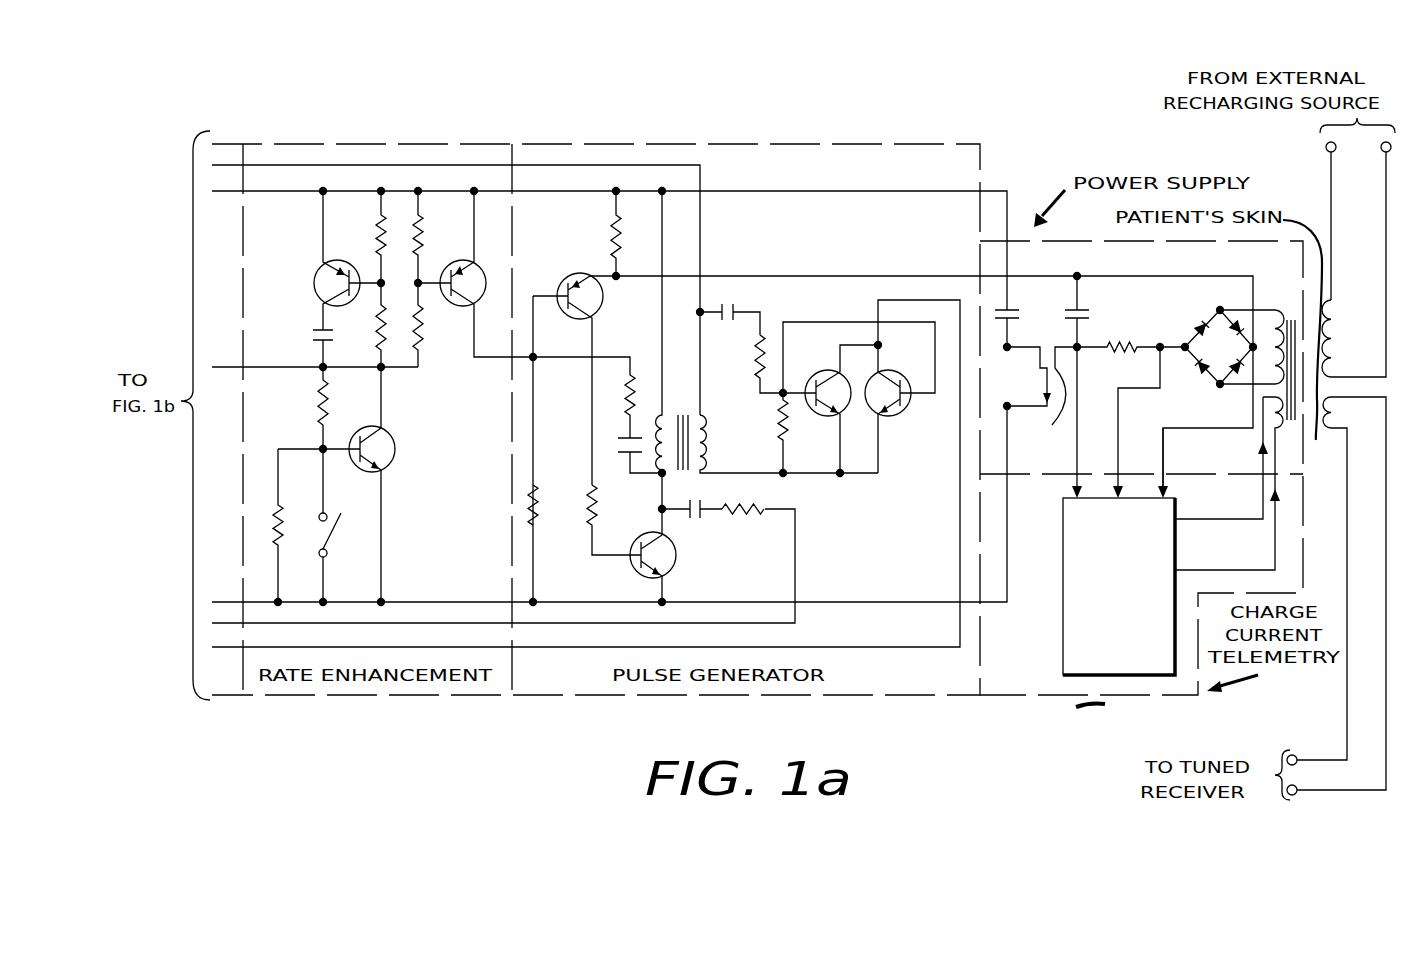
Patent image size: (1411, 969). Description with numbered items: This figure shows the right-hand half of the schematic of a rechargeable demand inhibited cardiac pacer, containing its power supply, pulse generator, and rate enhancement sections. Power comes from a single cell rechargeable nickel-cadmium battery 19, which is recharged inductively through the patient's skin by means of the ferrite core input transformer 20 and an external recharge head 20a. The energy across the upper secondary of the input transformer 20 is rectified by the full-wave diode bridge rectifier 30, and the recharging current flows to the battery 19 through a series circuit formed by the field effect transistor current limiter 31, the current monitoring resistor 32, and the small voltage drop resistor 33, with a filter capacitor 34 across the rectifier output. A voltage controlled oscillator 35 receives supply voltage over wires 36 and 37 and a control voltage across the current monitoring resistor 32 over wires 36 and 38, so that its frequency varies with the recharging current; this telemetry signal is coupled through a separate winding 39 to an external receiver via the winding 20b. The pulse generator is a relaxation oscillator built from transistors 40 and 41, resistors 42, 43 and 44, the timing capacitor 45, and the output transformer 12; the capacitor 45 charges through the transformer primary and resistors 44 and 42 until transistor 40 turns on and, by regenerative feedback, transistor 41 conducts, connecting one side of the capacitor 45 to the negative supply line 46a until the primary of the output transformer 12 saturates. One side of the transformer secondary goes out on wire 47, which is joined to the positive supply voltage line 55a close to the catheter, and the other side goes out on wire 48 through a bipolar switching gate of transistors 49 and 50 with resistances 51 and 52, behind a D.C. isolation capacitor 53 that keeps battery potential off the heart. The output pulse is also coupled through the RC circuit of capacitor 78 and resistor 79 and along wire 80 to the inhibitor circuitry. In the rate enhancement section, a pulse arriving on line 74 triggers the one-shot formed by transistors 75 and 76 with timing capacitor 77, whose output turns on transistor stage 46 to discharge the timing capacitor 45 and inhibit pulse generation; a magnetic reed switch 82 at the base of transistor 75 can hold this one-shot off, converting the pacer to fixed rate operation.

The output transformer 12 is at (702, 440).
The rechargeable nickel-cadmium battery 19 is at (1010, 308).
The ferrite core input transformer 20 is at (1283, 308).
The recharge head 20a is at (1380, 341).
The winding 20b is at (1382, 423).
The full-wave diode bridge rectifier 30 is at (1200, 338).
The field effect transistor current limiter 31 is at (1058, 418).
The current monitoring resistor 32 is at (1103, 343).
The voltage drop resistor 33 is at (612, 228).
The filter capacitor 34 is at (1082, 308).
The voltage controlled oscillator 35 is at (1063, 652).
The wire 36 is at (1118, 397).
The wire 37 is at (1162, 453).
The wire 38 is at (1080, 365).
The separate winding 39 is at (1282, 422).
The transistor 40 is at (602, 300).
The transistor 41 is at (677, 555).
The resistor 42 is at (537, 490).
The resistor 43 is at (593, 523).
The resistor 44 is at (632, 378).
The timing capacitor 45 is at (625, 455).
The transistor stage 46 is at (448, 300).
The negative supply line 46a is at (940, 596).
The wire 47 is at (342, 166).
The wire 48 is at (943, 648).
The transistor 49 is at (828, 372).
The transistor 50 is at (890, 372).
The resistance 51 is at (763, 332).
The resistance 52 is at (785, 440).
The D.C. isolation capacitor 53 is at (735, 305).
The positive supply voltage line 55a is at (858, 191).
The line 74 is at (268, 349).
The transistor 75 is at (393, 457).
The transistor 76 is at (323, 267).
The timing capacitor 77 is at (318, 330).
The RC circuit capacitor 78 is at (688, 503).
The RC circuit resistor 79 is at (760, 508).
The wire 80 is at (337, 627).
The magnetic reed switch 82 is at (333, 515).